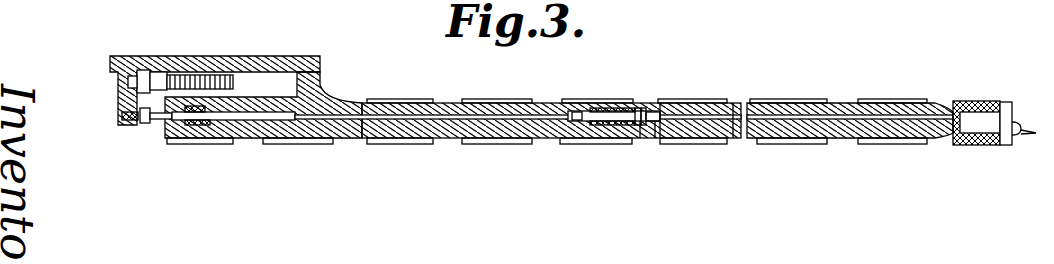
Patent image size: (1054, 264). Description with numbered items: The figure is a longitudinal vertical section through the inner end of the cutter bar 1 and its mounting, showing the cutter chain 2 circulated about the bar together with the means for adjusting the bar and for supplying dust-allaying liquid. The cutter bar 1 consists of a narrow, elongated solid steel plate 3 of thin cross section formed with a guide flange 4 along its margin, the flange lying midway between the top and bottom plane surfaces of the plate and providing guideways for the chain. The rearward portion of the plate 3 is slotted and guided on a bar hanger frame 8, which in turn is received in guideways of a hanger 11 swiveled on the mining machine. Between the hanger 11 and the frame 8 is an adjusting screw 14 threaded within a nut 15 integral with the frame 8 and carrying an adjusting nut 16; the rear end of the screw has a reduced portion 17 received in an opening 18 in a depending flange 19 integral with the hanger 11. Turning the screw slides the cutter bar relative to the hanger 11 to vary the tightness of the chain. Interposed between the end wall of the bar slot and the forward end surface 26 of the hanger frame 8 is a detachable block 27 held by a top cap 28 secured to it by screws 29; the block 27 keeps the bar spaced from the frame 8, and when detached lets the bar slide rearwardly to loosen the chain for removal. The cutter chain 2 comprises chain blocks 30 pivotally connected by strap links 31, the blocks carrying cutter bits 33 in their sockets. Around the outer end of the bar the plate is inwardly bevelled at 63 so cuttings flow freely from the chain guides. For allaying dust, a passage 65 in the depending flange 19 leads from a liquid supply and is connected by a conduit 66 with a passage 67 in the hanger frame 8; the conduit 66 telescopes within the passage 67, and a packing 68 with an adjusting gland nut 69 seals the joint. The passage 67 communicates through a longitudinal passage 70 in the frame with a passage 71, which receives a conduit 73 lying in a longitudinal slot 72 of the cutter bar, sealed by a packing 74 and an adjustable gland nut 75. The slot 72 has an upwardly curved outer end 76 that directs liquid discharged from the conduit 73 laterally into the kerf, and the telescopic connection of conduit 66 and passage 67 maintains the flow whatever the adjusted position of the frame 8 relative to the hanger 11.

The cutter bar 1 is at (877, 130).
The cutter chain 2 is at (783, 101).
The solid steel plate 3 is at (935, 130).
The guide flange 4 is at (981, 123).
The bar hanger frame 8 is at (452, 128).
The hanger 11 is at (246, 62).
The adjusting screw 14 is at (208, 76).
The nut 15 is at (180, 76).
The adjusting nut 16 is at (158, 78).
The reduced portion 17 is at (134, 76).
The opening 18 is at (126, 86).
The depending flange 19 is at (121, 97).
The forward end surface 26 is at (643, 132).
The detachable block 27 is at (655, 122).
The top cap 28 is at (651, 110).
The screws 29 is at (665, 116).
The chain blocks 30 is at (386, 101).
The strap links 31 is at (963, 140).
The cutter bits 33 is at (1021, 137).
The bevelled portions 63 is at (954, 124).
The passage 65 is at (121, 122).
The conduit 66 is at (163, 118).
The passage 67 is at (261, 116).
The packing 68 is at (207, 122).
The adjusting gland nut 69 is at (187, 118).
The longitudinal passage 70 is at (502, 116).
The passage 71 is at (574, 112).
The longitudinal slot 72 is at (738, 118).
The conduit 73 is at (703, 112).
The packing 74 is at (607, 108).
The adjustable gland nut 75 is at (629, 108).
The upwardly curved outer end 76 is at (941, 116).